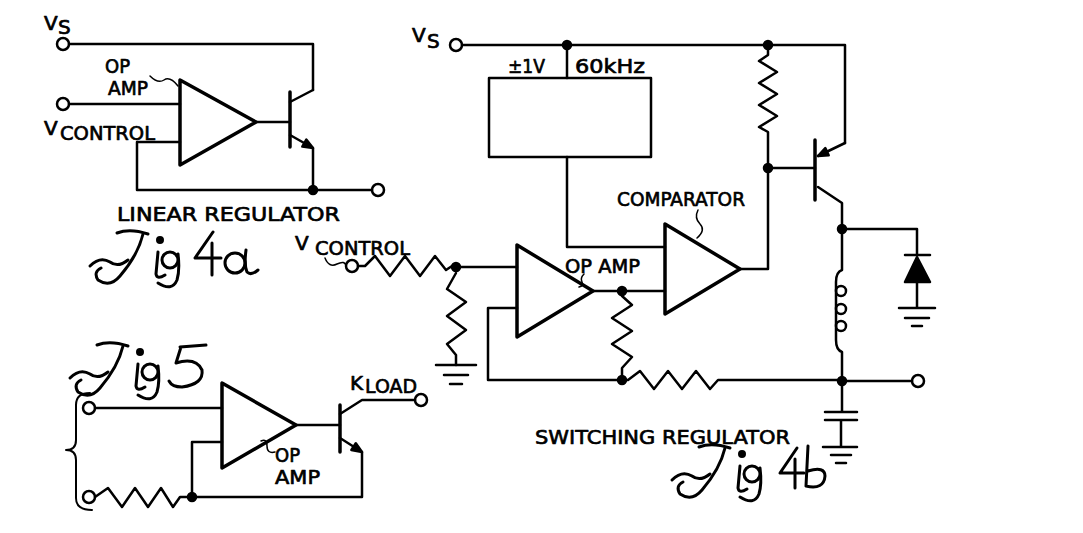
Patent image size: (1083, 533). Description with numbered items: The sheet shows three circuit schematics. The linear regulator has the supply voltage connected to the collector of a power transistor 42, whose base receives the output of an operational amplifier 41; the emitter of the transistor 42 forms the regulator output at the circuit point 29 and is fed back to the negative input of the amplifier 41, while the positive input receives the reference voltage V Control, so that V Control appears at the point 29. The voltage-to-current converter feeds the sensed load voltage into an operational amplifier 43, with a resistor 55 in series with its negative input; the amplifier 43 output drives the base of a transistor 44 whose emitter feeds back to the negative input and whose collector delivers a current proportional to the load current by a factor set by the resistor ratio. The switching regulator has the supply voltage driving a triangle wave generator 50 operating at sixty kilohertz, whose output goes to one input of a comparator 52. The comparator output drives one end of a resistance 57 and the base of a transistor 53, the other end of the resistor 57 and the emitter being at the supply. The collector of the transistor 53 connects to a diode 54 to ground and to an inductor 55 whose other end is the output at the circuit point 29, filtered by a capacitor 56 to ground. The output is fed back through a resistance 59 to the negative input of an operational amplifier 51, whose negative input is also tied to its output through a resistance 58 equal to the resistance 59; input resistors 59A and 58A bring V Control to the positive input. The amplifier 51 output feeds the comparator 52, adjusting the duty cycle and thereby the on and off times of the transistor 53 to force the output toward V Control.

In FIG. 4A, the circuit point 29 is at (384, 180).
In FIG. 4B, the circuit point 29 is at (922, 373).
In FIG. 4A, the operational amplifier 41 is at (237, 106).
In FIG. 4A, the power transistor 42 is at (305, 94).
In FIG. 5, the operational amplifier 43 is at (261, 405).
In FIG. 5, the transistor 44 is at (354, 406).
In FIG. 4B, the triangle wave generator 50 is at (651, 108).
In FIG. 4B, the operational amplifier 51 is at (533, 247).
In FIG. 4B, the comparator 52 is at (705, 293).
In FIG. 4B, the transistor 53 is at (828, 183).
In FIG. 4B, the diode 54 is at (931, 262).
In FIG. 5, the resistor / inductor 55 is at (183, 498).
In FIG. 4B, the resistor / inductor 55 is at (831, 297).
In FIG. 4B, the capacitor 56 is at (848, 413).
In FIG. 4B, the resistance 57 is at (760, 87).
In FIG. 4B, the resistance 58 is at (613, 331).
In FIG. 4B, the resistor 58A is at (461, 307).
In FIG. 4B, the resistance 59 is at (643, 383).
In FIG. 4B, the resistor 59A is at (456, 252).